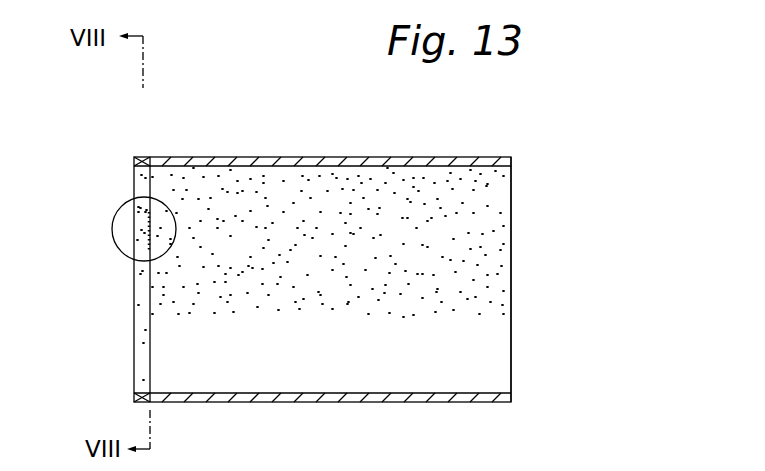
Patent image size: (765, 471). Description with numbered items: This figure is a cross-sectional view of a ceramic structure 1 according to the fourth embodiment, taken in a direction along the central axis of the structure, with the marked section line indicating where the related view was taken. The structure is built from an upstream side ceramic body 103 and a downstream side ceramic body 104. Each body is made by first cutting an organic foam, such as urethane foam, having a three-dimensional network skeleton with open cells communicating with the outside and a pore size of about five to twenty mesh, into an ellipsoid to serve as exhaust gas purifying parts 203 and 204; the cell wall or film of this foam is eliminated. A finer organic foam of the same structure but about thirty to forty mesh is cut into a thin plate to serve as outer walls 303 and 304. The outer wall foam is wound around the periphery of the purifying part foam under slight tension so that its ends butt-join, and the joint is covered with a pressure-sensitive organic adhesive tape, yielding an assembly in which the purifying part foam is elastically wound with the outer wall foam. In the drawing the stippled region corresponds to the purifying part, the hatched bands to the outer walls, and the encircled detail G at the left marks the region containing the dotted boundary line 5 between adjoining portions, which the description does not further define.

The panel 1 is at (264, 72).
The upstream side ceramic body 103 is at (133, 194).
The exhaust gas purifying part 203 is at (140, 376).
The outer wall 303 is at (137, 157).
The outer wall 304 is at (323, 164).
The exhaust gas purifying part 204 is at (303, 380).
The downstream side ceramic body 104 is at (511, 181).
The gap region G is at (113, 228).
The gap line 5 is at (133, 243).